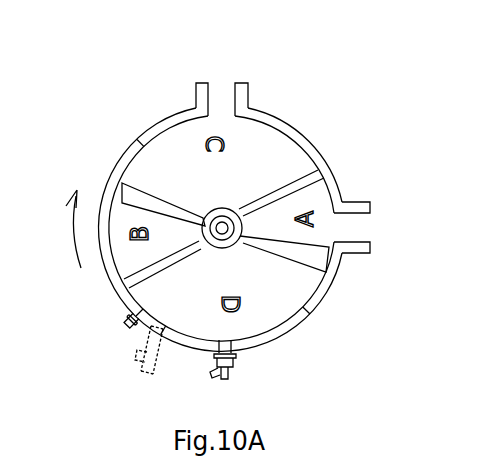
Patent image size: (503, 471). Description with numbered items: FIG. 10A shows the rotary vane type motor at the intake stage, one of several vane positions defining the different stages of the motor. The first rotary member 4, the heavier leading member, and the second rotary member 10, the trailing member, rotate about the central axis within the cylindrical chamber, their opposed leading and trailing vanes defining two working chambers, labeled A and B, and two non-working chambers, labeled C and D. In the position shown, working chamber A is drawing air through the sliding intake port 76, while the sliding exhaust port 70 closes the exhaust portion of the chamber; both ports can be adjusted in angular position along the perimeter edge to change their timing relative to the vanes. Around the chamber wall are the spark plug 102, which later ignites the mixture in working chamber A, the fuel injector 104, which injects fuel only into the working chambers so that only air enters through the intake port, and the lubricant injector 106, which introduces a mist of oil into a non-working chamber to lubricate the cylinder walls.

The sliding exhaust port 70 is at (222, 82).
The sliding intake port 76 is at (372, 228).
The first rotary member 4 is at (168, 188).
The second rotary member 10 is at (276, 183).
The spark plug 102 is at (128, 318).
The fuel injector 104 is at (140, 370).
The lubricant injector 106 is at (229, 377).